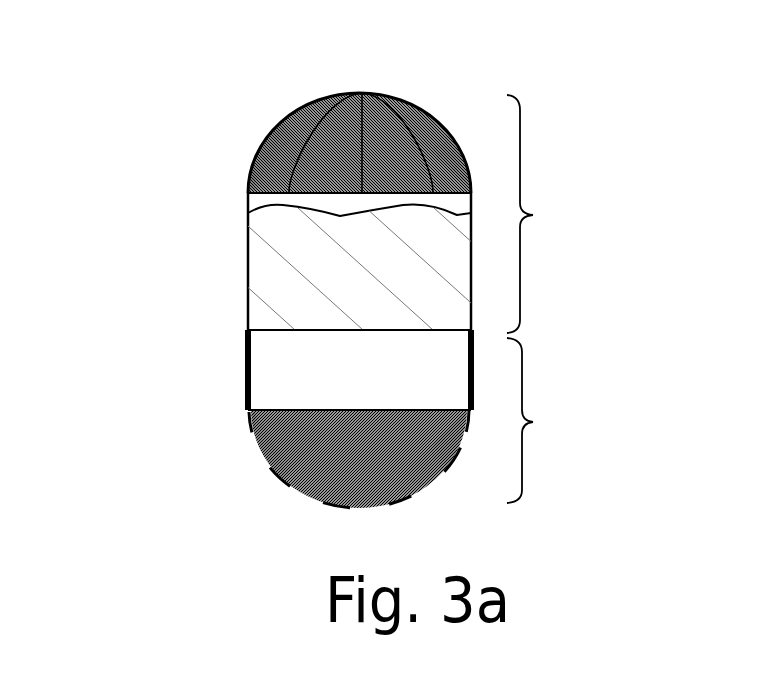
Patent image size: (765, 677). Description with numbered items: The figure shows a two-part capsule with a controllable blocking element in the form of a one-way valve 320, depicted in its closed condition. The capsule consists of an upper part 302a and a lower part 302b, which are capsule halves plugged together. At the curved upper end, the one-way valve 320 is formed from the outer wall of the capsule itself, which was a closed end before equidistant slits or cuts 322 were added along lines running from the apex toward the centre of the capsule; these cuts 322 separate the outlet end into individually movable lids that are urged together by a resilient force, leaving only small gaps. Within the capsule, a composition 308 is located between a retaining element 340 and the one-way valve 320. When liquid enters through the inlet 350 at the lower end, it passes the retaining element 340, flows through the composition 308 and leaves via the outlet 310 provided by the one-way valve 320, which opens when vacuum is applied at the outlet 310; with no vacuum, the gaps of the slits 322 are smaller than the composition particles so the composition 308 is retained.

The upper part 302a is at (550, 214).
The lower part 302b is at (552, 420).
The composition 308 is at (317, 254).
The outlet 310 is at (252, 166).
The one-way valve 320 is at (362, 93).
The slits or cuts 322 is at (305, 146).
The retaining element 340 is at (352, 471).
The inlet 350 is at (302, 498).